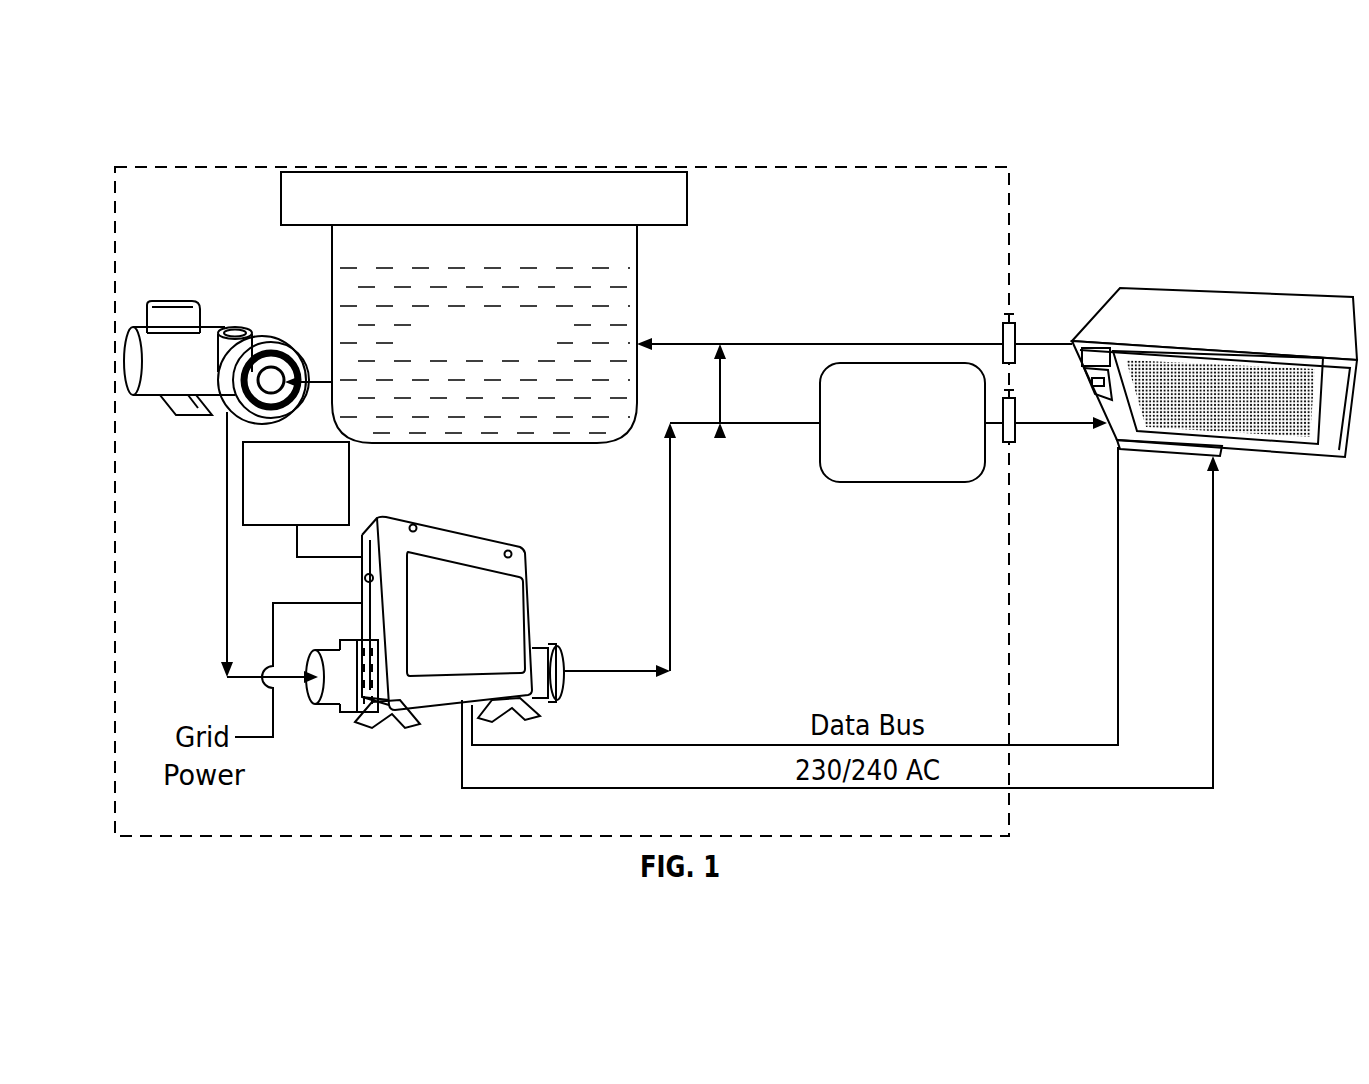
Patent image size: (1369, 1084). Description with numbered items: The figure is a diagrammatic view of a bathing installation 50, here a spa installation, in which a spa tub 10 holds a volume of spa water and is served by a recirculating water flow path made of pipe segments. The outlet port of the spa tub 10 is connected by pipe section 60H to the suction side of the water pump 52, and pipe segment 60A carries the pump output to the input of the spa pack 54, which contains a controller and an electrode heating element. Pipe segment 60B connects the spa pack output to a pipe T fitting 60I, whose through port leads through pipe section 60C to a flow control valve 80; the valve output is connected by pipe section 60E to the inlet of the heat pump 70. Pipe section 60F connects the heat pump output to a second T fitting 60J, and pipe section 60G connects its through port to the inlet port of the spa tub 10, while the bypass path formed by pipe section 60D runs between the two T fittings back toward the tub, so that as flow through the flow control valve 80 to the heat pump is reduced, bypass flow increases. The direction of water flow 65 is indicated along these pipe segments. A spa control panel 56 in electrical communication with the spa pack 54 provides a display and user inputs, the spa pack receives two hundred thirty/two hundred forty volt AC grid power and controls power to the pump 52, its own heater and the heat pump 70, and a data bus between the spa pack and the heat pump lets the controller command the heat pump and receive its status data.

The spa tub 10 is at (637, 270).
The bathing installation 50 is at (1066, 184).
The water pump 52 is at (150, 303).
The spa pack 54 is at (530, 578).
The spa control panel 56 is at (293, 527).
The pipe segment 60A is at (227, 497).
The pipe segment 60B is at (672, 557).
The pipe section 60C is at (755, 425).
The pipe section (bypass path) 60D is at (717, 378).
The pipe section 60E is at (1025, 420).
The pipe section 60F is at (810, 342).
The pipe section 60G is at (688, 342).
The pipe section 60H is at (306, 372).
The pipe T fitting 60I is at (718, 440).
The T fitting 60J is at (726, 334).
The water flow direction 65 is at (200, 632).
The heat pump 70 is at (1323, 305).
The flow control valve 80 is at (933, 483).